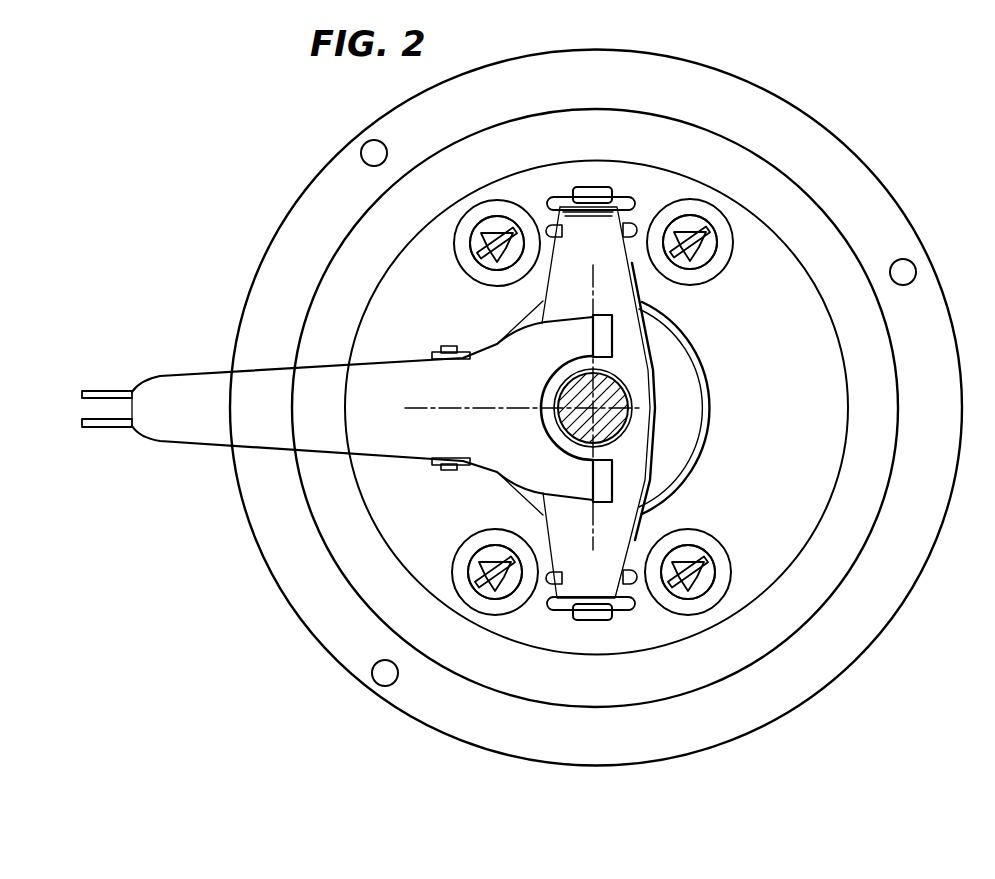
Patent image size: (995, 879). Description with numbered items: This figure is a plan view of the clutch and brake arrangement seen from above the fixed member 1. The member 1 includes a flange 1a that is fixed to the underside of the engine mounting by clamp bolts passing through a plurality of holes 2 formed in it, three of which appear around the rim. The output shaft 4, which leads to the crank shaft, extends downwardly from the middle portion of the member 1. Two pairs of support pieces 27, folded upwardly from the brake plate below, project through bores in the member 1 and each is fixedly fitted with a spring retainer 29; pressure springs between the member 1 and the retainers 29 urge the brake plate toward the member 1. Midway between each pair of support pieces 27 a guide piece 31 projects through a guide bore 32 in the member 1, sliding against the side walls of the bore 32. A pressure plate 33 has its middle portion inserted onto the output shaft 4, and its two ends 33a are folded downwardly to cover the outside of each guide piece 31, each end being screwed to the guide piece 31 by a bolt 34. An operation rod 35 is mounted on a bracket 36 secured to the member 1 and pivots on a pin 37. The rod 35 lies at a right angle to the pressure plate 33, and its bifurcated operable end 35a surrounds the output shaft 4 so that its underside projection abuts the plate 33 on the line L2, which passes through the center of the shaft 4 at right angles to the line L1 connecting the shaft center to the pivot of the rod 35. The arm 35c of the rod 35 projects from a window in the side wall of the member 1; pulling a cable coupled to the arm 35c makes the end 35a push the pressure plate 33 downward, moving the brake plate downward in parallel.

The fixed member 1 is at (806, 107).
The flange 1a is at (950, 389).
The holes 2 is at (917, 276).
The output shaft 4 is at (625, 392).
The support pieces 27 is at (483, 257).
The spring retainer 29 is at (486, 212).
The guide piece 31 is at (627, 220).
The guide bore 32 is at (630, 194).
The pressure plate 33 is at (633, 343).
The ends of pressure plate 33a is at (565, 202).
The bolt 34 is at (600, 187).
The operation rod 35 is at (415, 458).
The operable end 35a is at (590, 327).
The arm 35c is at (105, 430).
The bracket 36 is at (433, 353).
The pin 37 is at (457, 347).
The line L1 is at (433, 408).
The line L2 is at (593, 513).